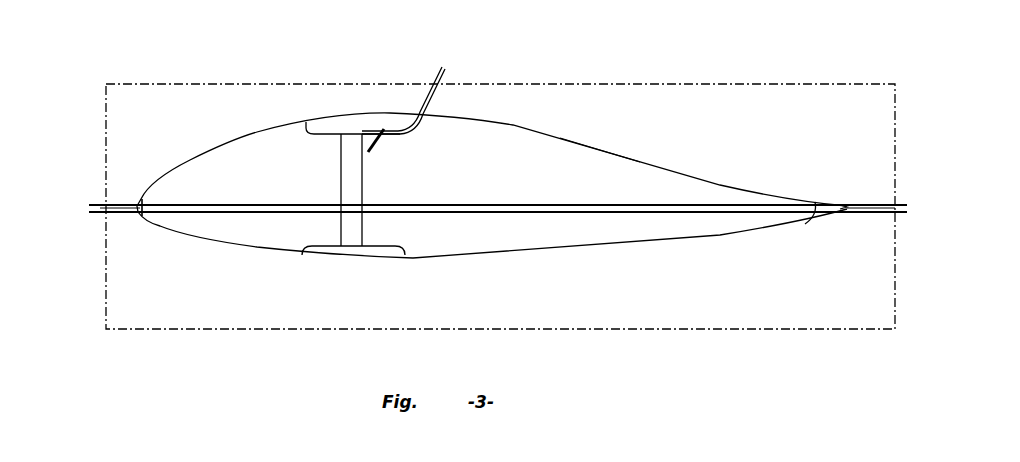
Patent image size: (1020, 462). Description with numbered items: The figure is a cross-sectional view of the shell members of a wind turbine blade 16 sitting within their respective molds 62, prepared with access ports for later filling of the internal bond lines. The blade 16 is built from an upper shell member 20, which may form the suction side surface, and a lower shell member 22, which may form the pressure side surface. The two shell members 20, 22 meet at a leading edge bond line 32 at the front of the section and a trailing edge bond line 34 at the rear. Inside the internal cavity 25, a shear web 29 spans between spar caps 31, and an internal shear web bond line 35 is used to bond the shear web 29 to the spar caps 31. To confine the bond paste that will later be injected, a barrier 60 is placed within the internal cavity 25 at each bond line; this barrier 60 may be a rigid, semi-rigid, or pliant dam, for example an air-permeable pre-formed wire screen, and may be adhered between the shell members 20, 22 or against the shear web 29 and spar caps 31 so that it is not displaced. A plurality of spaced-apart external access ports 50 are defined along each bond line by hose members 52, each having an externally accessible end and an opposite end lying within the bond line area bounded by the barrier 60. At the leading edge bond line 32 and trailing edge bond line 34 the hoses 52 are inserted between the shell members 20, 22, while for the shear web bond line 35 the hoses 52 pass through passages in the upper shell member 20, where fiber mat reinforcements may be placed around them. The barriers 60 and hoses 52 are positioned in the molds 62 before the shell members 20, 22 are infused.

The wind turbine blade 16 is at (458, 70).
The upper shell member 20 is at (510, 126).
The lower shell member 22 is at (228, 249).
The internal cavity 25 is at (608, 172).
The shear web 29 is at (348, 186).
The spar caps 31 is at (400, 250).
The leading edge bond line 32 is at (140, 222).
The trailing edge bond line 34 is at (820, 197).
The shear web bond line 35 is at (350, 144).
The external access ports 50 is at (117, 194).
The hose members 52 is at (430, 82).
The barrier 60 is at (150, 200).
The molds 62 is at (752, 84).